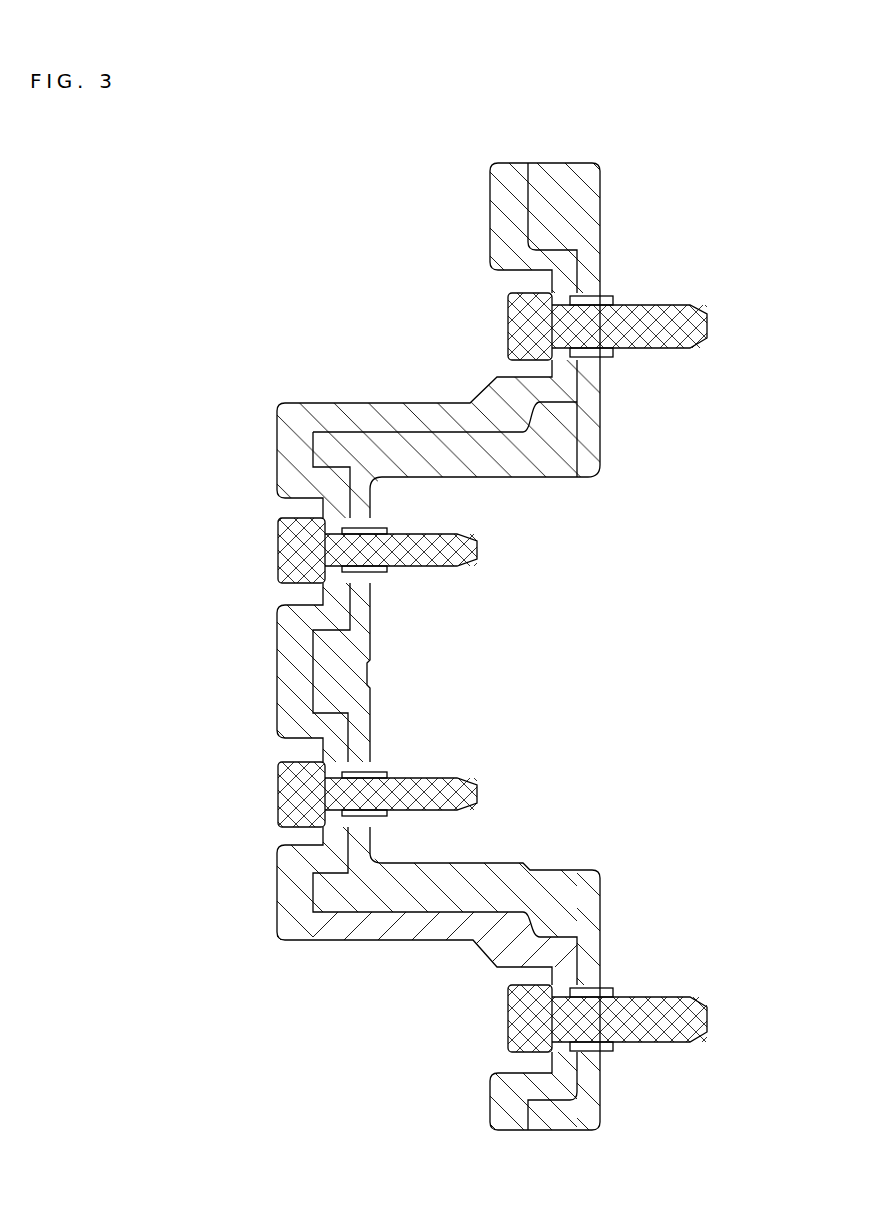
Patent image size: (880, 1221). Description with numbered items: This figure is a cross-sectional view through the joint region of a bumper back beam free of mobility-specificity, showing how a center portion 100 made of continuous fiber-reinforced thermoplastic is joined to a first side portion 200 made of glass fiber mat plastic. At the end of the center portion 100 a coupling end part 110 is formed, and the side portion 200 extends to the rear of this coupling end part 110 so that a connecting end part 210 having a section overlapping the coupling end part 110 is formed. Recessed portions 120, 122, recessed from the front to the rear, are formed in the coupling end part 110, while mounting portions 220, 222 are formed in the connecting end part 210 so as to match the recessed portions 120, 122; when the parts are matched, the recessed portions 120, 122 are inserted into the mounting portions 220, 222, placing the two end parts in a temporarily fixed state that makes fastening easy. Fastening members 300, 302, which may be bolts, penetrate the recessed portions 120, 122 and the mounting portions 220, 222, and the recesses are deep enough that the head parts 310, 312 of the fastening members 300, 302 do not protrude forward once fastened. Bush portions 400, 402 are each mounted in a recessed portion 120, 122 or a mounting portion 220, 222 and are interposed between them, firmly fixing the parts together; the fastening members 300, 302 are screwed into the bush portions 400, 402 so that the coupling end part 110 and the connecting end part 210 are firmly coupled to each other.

The center portion 100 is at (478, 212).
The coupling end part 110 is at (295, 679).
The recessed portion 120 is at (382, 607).
The recessed portion 122 is at (333, 750).
The first side portion 200 is at (612, 201).
The connecting end part 210 is at (518, 888).
The mounting portion 220 is at (380, 500).
The mounting portion 222 is at (377, 843).
The fastening member 300 is at (355, 518).
The fastening member 302 is at (333, 827).
The head part 310 is at (278, 548).
The head part 312 is at (278, 796).
The bush portion 400 is at (410, 578).
The bush portion 402 is at (407, 768).